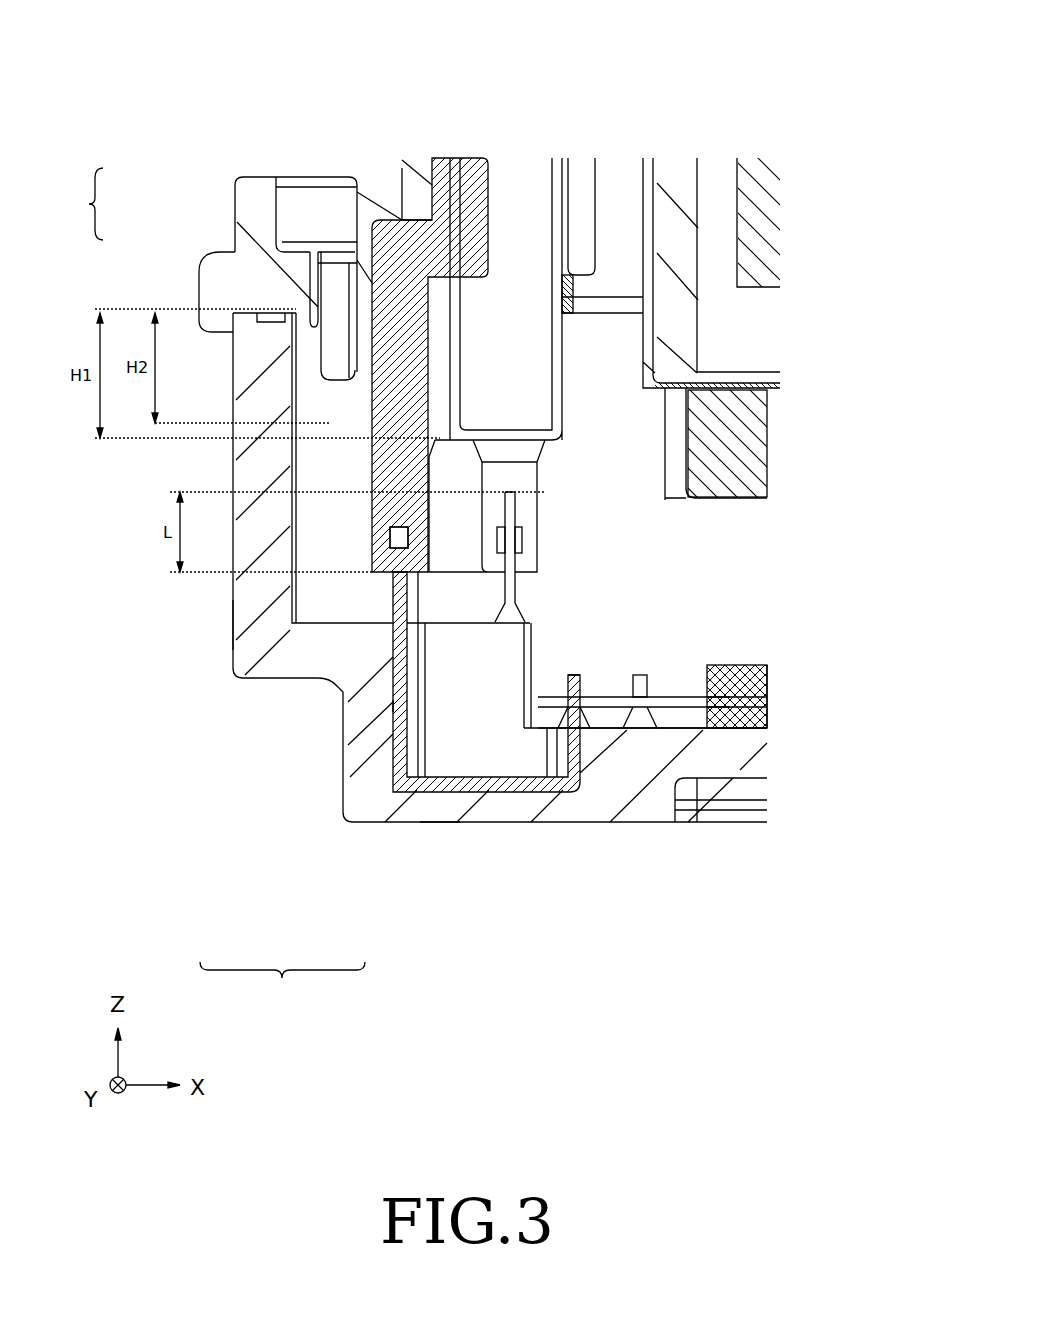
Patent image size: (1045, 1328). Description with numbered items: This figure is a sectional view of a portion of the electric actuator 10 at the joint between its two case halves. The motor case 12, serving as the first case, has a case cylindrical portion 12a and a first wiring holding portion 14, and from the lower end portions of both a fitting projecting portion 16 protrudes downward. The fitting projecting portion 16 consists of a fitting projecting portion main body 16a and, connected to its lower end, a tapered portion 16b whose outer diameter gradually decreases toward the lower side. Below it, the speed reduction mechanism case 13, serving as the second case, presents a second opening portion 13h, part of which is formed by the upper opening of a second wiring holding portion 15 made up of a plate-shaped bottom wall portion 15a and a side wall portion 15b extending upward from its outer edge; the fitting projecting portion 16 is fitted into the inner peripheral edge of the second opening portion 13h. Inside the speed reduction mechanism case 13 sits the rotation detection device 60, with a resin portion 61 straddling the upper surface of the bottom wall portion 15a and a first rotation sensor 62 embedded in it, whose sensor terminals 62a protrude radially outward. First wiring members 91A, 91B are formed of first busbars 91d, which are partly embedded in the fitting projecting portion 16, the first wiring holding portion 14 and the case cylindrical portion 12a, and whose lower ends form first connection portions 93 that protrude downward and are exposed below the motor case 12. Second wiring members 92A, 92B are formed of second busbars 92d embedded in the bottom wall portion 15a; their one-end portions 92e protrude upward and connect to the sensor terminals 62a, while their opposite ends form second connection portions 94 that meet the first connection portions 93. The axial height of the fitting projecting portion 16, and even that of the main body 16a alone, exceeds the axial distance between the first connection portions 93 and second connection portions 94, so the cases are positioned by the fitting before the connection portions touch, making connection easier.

The electric actuator 10 is at (768, 88).
The motor case 12 is at (420, 144).
The case cylindrical portion 12a is at (677, 332).
The speed reduction mechanism case 13 is at (527, 838).
The second opening portion 13h is at (308, 243).
The first wiring holding portion 14 is at (255, 207).
The second wiring holding portion 15 is at (282, 986).
The bottom wall portion 15a is at (438, 808).
The side wall portion 15b is at (245, 615).
The fitting projecting portion 16 is at (79, 204).
The fitting projecting portion main body 16a is at (290, 350).
The tapered portion 16b is at (215, 352).
The rotation detection device 60 is at (770, 722).
The resin portion 61 is at (740, 730).
The first rotation sensor 62 is at (768, 694).
The sensor terminals 62a is at (686, 692).
The first wiring member 91A is at (547, 480).
The first wiring member 91B is at (433, 353).
The first busbar 91d is at (405, 235).
The second wiring member 92A is at (524, 588).
The second wiring member 92B is at (387, 592).
The second busbar 92d is at (393, 706).
The one-end portions 92e is at (580, 690).
The first connection portion 93 is at (373, 481).
The second connection portion 94 is at (387, 541).